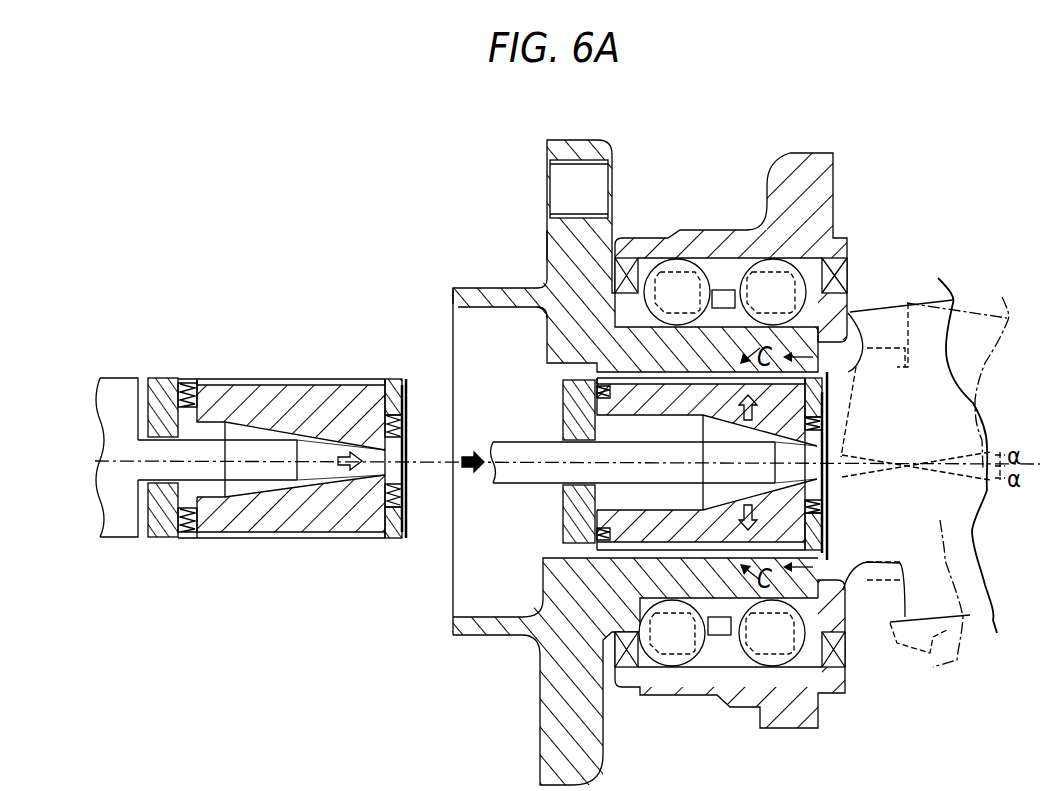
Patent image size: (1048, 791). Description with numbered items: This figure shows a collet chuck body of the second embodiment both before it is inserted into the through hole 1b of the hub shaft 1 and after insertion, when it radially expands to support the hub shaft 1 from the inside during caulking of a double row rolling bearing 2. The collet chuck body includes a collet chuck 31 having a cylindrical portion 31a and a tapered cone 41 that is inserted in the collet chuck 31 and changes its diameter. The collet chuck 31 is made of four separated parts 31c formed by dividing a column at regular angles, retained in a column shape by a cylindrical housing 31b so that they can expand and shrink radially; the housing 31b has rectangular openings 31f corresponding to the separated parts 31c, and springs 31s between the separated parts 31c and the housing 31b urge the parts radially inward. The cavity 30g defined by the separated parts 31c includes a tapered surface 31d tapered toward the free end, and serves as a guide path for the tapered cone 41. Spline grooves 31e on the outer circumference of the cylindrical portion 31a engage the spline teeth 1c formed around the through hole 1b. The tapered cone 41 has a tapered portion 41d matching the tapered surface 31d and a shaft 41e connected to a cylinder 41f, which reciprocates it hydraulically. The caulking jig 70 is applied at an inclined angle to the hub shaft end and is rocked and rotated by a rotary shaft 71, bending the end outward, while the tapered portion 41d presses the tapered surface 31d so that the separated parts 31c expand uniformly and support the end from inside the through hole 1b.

The hub shaft 1 is at (465, 280).
The through hole 1b is at (545, 330).
The spline teeth 1c is at (547, 240).
The double row rolling bearing 2 is at (682, 178).
The cavity 30g is at (150, 415).
The collet chuck 31 is at (148, 318).
The cylindrical portion 31a is at (236, 365).
The cylindrical housing 31b is at (167, 535).
The separated parts 31c is at (323, 398).
The tapered surface 31d is at (693, 711).
The spline grooves 31e is at (360, 375).
The openings 31f is at (202, 378).
The springs 31s is at (185, 382).
The tapered cone 41 is at (204, 505).
The tapered portion 41d is at (263, 477).
The shaft 41e is at (157, 452).
The cylinder 41f is at (120, 527).
The caulking jig 70 is at (933, 668).
The rotary shaft 71 is at (923, 478).